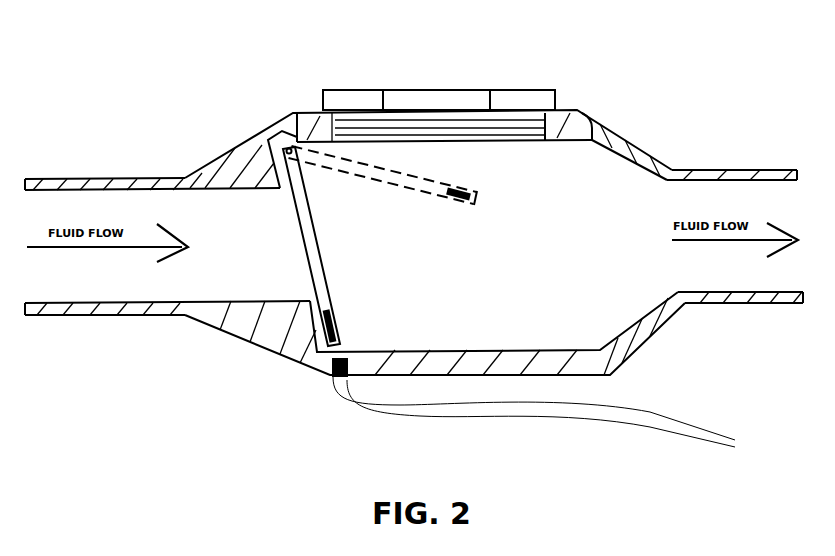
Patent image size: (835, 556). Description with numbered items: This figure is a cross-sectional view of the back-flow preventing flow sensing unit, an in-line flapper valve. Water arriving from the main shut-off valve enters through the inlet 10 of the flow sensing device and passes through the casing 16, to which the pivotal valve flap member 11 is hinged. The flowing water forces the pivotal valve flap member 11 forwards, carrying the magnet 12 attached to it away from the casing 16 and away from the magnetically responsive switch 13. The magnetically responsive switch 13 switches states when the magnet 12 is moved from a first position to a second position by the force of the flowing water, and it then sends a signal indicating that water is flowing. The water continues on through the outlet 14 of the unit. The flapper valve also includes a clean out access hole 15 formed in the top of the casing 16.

The inlet 10 is at (35, 287).
The pivotal valve flap member 11 is at (330, 262).
The magnet 12 is at (313, 323).
The magnetically responsive switch 13 is at (330, 374).
The outlet 14 is at (715, 268).
The clean out access hole 15 is at (455, 88).
The casing 16 is at (238, 146).